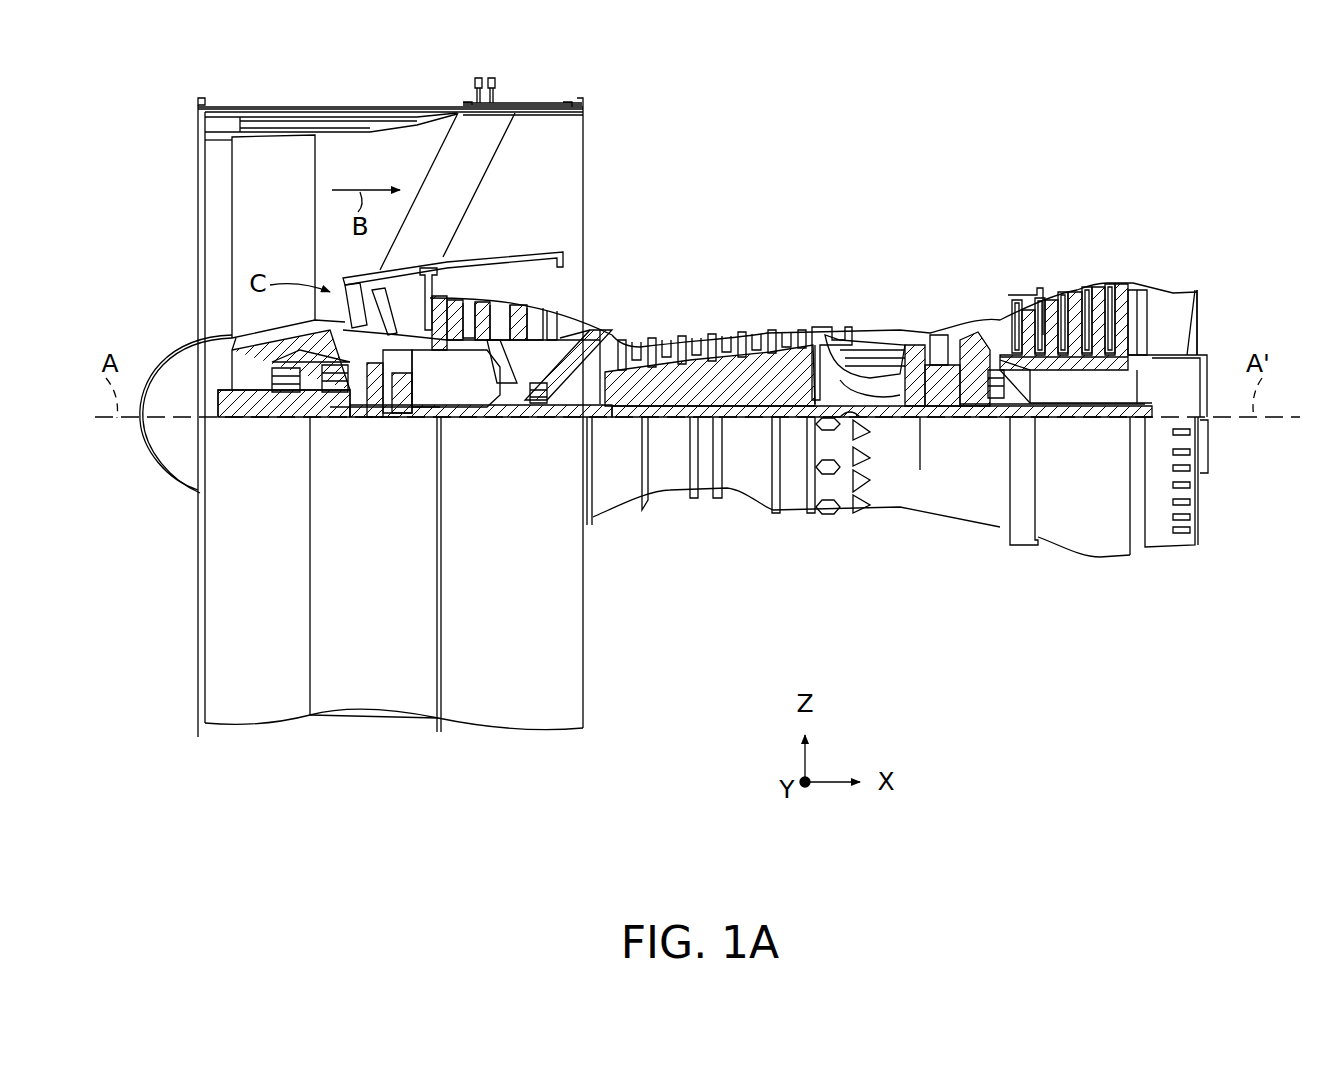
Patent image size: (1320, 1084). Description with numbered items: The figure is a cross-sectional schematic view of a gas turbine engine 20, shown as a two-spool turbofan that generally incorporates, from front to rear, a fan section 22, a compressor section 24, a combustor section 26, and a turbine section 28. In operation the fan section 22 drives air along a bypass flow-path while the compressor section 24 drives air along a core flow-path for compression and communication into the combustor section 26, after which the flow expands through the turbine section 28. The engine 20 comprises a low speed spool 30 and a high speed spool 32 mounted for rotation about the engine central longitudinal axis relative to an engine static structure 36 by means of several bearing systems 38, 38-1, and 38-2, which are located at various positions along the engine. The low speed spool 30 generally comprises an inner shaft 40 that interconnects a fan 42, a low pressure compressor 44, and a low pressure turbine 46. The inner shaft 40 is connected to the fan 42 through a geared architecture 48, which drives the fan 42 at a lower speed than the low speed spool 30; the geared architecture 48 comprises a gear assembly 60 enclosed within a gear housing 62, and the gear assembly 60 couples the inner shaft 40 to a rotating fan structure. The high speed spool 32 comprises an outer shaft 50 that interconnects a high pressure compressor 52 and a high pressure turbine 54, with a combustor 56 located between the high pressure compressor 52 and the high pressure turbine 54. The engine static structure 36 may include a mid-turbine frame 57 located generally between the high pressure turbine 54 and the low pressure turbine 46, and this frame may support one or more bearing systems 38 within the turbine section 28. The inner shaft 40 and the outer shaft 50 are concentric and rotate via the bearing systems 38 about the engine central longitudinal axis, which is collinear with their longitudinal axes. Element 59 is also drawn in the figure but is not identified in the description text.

The gas turbine engine 20 is at (925, 140).
The fan section 22 is at (435, 86).
The compressor section 24 is at (445, 217).
The combustor section 26 is at (810, 217).
The turbine section 28 is at (1140, 217).
The low speed spool 30 is at (752, 435).
The high speed spool 32 is at (792, 390).
The engine static structure 36 is at (947, 493).
The bearing system 38 is at (985, 404).
The bearing system 38-1 is at (288, 395).
The bearing system 38-2 is at (540, 405).
The inner shaft 40 is at (604, 418).
The fan 42 is at (256, 234).
The low pressure compressor 44 is at (520, 318).
The low pressure turbine 46 is at (1072, 300).
The geared architecture 48 is at (400, 440).
The outer shaft 50 is at (862, 406).
The high pressure compressor 52 is at (735, 390).
The high pressure turbine 54 is at (940, 333).
The combustor 56 is at (865, 360).
The mid-turbine frame 57 is at (962, 355).
The airfoils 59 is at (1007, 320).
The gear assembly 60 is at (412, 395).
The gear housing 62 is at (412, 360).